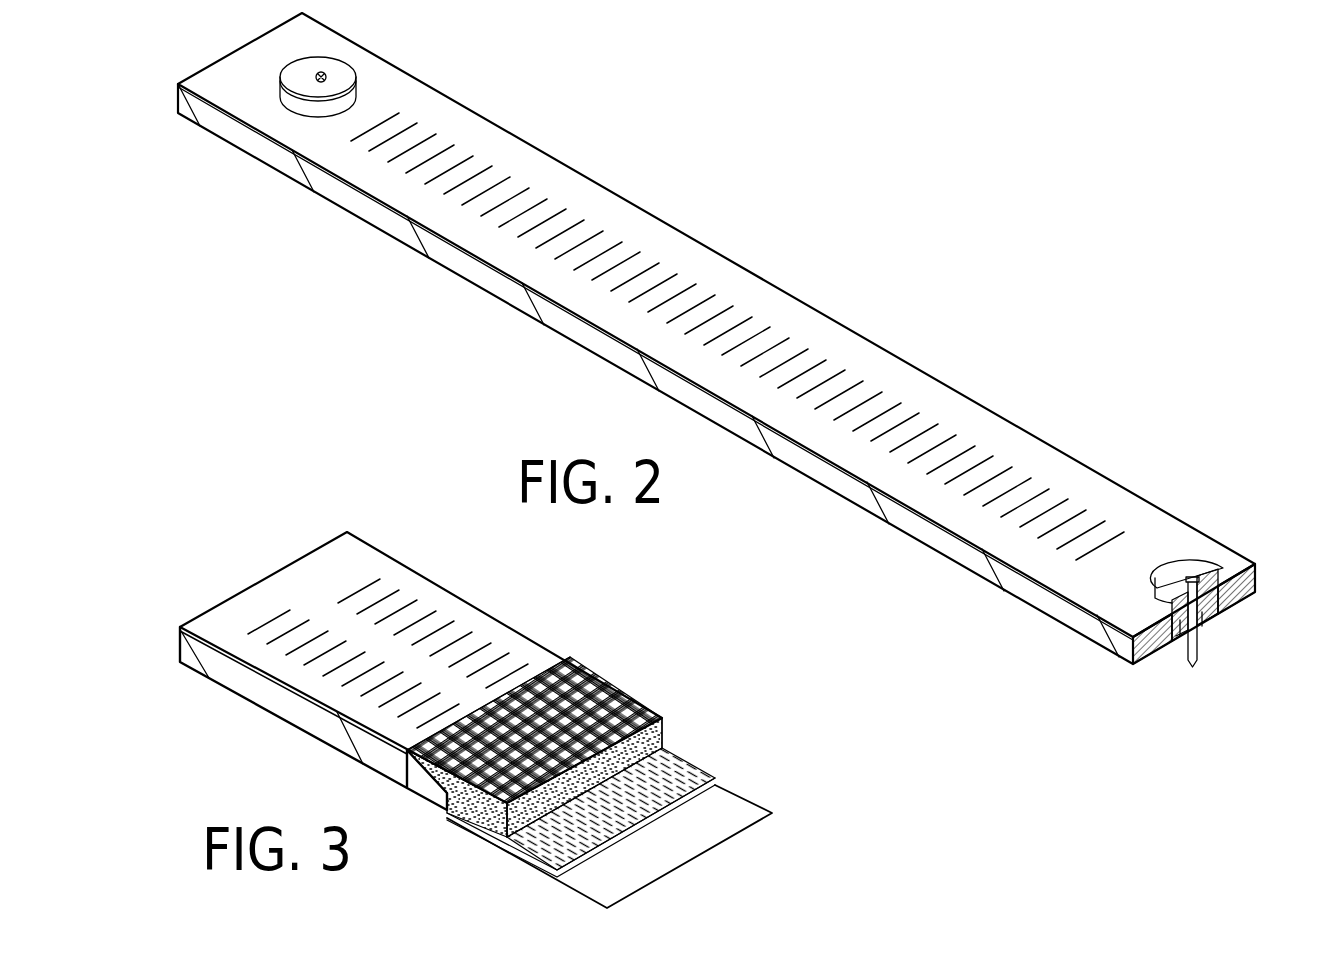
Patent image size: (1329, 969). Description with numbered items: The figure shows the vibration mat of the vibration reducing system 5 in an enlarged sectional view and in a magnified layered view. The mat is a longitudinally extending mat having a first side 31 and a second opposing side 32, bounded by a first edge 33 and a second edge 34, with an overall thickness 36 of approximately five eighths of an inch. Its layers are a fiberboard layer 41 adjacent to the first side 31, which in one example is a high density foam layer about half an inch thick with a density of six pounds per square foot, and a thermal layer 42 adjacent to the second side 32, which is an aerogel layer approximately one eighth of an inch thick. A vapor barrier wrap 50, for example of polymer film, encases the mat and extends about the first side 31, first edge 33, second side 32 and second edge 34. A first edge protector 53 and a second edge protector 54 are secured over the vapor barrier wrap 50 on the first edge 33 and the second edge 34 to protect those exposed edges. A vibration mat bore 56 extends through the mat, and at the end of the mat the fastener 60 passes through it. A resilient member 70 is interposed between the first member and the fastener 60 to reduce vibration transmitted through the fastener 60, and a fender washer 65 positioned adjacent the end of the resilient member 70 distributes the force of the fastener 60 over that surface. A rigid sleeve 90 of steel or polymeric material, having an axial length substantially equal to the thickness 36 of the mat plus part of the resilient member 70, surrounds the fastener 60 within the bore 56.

In FIG. 2, the vibration reducing system 5 is at (1003, 264).
In FIG. 2, the vapor barrier wrap 50 is at (978, 458).
In FIG. 3, the vapor barrier wrap 50 is at (277, 598).
In FIG. 2, the first edge protector 53 is at (1118, 655).
In FIG. 3, the first edge protector 53 is at (297, 719).
In FIG. 2, the second edge protector 54 is at (1257, 578).
In FIG. 3, the second edge protector 54 is at (570, 657).
In FIG. 2, the overall thickness 36 is at (570, 322).
In FIG. 3, the overall thickness 36 is at (345, 742).
In FIG. 2, the fastener 60 is at (327, 75).
In FIG. 2, the fender washer 65 is at (292, 78).
In FIG. 2, the resilient member 70 is at (293, 105).
In FIG. 2, the rigid sleeve 90 is at (1210, 628).
In FIG. 2, the vibration mat bore 56 is at (1180, 632).
In FIG. 3, the first side 31 is at (597, 683).
In FIG. 3, the second opposing side 32 is at (537, 867).
In FIG. 3, the first edge 33 is at (490, 827).
In FIG. 3, the second edge 34 is at (662, 720).
In FIG. 3, the fiberboard layer 41 is at (612, 730).
In FIG. 3, the thermal layer 42 is at (657, 763).